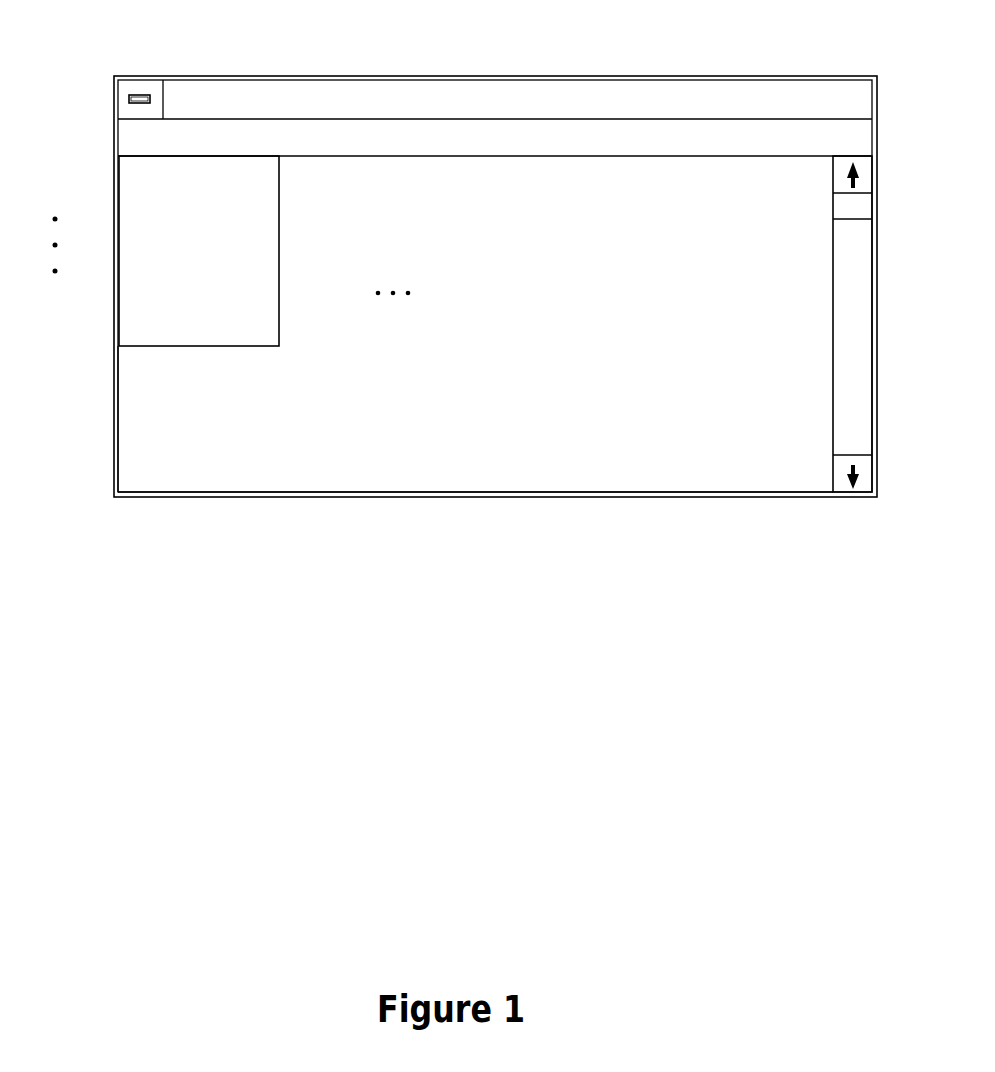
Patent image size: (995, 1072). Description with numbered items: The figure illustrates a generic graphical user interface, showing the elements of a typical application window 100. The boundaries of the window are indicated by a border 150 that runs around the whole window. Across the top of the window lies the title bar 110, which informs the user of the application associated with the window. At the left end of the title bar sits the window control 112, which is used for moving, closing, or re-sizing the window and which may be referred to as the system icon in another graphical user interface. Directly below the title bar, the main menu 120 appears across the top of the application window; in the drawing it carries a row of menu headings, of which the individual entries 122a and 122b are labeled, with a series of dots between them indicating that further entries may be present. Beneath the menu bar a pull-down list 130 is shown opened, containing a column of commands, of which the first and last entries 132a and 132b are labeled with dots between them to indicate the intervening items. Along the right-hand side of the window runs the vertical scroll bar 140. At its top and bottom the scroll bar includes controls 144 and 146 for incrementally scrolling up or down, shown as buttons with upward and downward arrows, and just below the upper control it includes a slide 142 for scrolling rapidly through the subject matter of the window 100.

The window 100 is at (827, 587).
The title bar 110 is at (750, 97).
The window control 112 is at (157, 87).
The main menu 120 is at (495, 218).
The menu bar item (Edit) 122a is at (182, 143).
The menu bar item (Help) 122b is at (480, 160).
The pull-down menu 130 is at (189, 277).
The menu item (New) 132a is at (117, 171).
The menu item (Exit) 132b is at (118, 326).
The vertical scroll bar 140 is at (803, 324).
The slide 142 is at (831, 207).
The scroll up control 144 is at (831, 178).
The scroll down control 146 is at (831, 471).
The border 150 is at (121, 433).